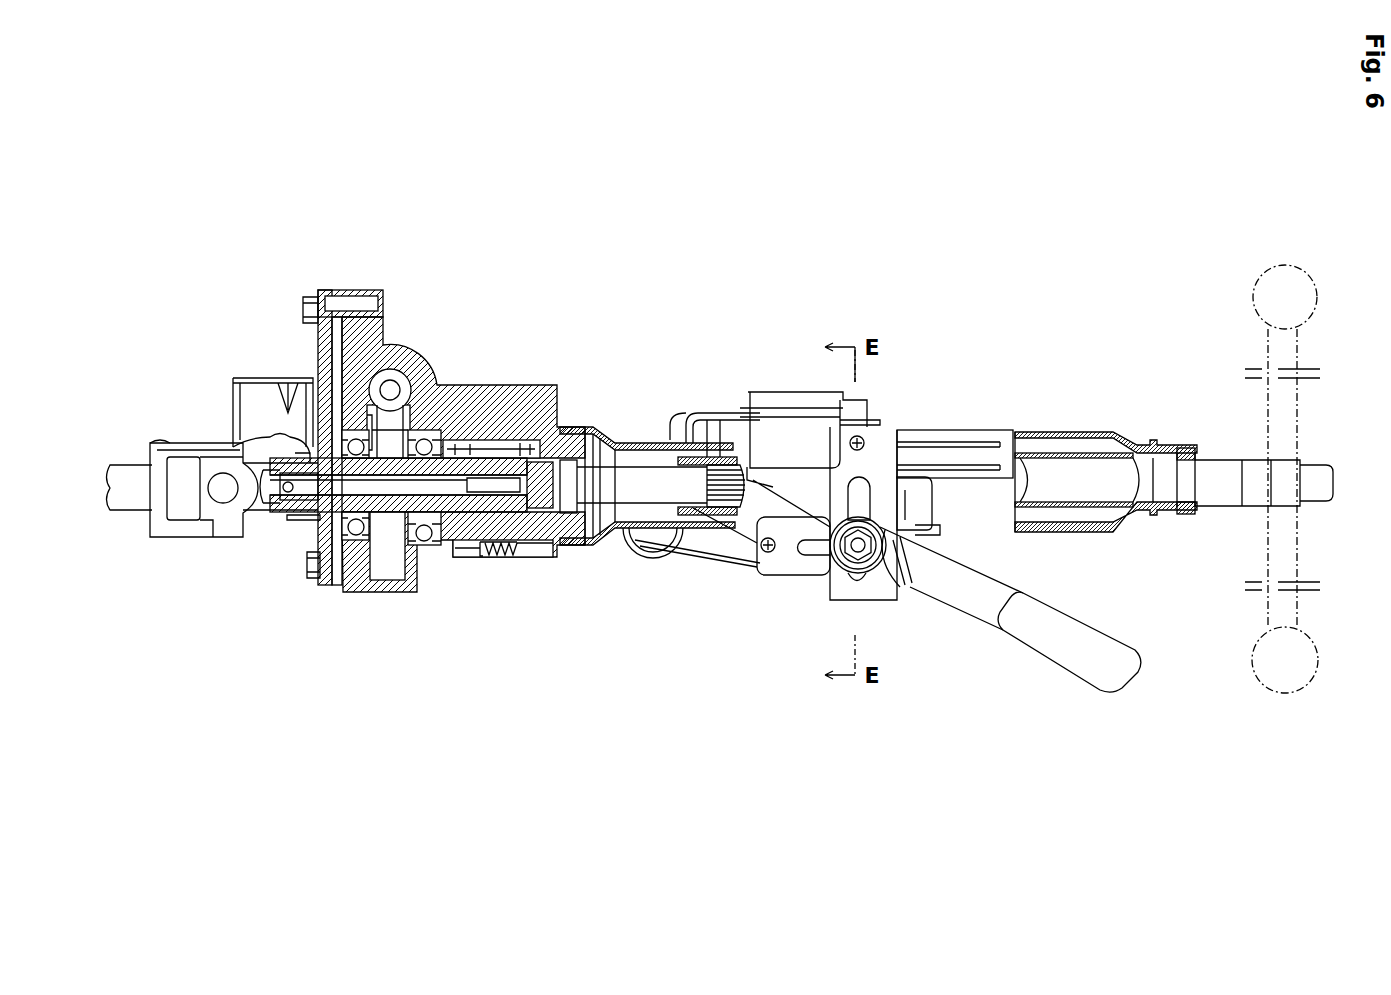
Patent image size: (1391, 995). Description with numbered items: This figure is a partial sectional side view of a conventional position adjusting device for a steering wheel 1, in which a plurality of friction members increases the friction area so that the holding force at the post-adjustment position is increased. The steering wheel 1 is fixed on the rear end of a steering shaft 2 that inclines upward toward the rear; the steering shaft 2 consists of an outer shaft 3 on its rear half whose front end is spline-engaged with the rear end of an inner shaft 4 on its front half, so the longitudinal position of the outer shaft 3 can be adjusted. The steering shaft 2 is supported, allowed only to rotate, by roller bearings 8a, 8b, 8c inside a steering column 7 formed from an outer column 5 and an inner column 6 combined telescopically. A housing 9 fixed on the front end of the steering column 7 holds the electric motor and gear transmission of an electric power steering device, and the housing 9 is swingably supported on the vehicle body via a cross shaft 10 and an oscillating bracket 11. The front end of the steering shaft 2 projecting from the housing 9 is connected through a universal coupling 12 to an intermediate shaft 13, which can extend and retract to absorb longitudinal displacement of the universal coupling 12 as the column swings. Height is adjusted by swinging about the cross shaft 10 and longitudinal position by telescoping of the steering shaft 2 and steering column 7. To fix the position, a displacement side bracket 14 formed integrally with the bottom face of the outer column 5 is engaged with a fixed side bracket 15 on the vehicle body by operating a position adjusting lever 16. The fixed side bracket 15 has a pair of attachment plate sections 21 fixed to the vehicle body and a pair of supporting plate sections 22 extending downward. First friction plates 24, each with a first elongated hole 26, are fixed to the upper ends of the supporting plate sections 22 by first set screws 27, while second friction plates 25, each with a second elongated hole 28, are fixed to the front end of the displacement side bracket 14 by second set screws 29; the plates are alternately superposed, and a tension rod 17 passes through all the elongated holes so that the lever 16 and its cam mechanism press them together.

The steering wheel 1 is at (1252, 640).
The steering shaft 2 is at (1212, 470).
The outer shaft 3 is at (700, 455).
The inner shaft 4 is at (650, 480).
The outer column 5 is at (1050, 433).
The inner column 6 is at (642, 443).
The steering column 7 is at (967, 433).
The roller bearing 8a is at (1180, 520).
The roller bearing 8b is at (430, 560).
The roller bearing 8c is at (337, 580).
The housing 9 is at (487, 395).
The cross shaft 10 is at (292, 452).
The oscillating bracket 11 is at (262, 400).
The universal coupling 12 is at (215, 530).
The intermediate shaft 13 is at (130, 483).
The displacement side bracket 14 is at (927, 505).
The fixed side bracket 15 is at (803, 477).
The position adjusting lever 16 is at (1030, 635).
The tension rod 17 is at (852, 560).
The attachment plate section 21 is at (770, 480).
The supporting plate section 22 is at (737, 475).
The first friction plate 24 is at (832, 590).
The second friction plate 25 is at (755, 535).
The first elongated hole 26 is at (858, 560).
The first set screw 27 is at (865, 437).
The second elongated hole 28 is at (810, 550).
The second set screw 29 is at (770, 560).